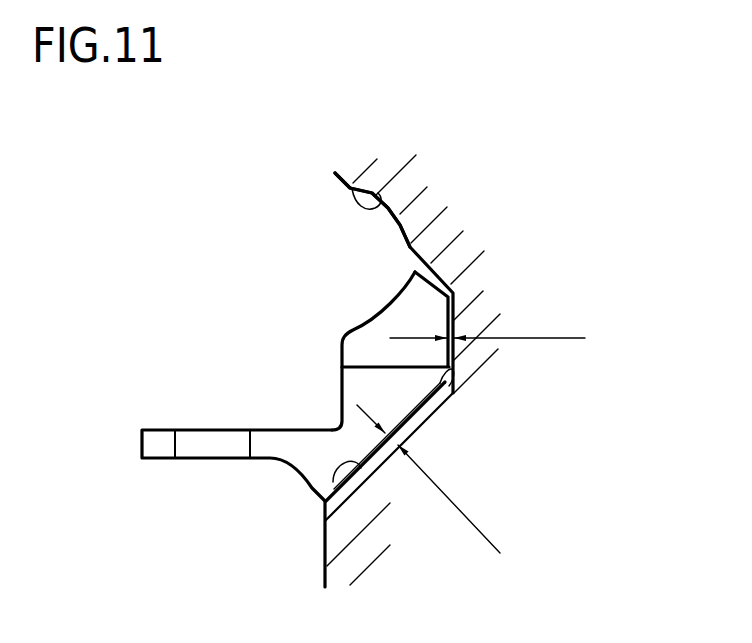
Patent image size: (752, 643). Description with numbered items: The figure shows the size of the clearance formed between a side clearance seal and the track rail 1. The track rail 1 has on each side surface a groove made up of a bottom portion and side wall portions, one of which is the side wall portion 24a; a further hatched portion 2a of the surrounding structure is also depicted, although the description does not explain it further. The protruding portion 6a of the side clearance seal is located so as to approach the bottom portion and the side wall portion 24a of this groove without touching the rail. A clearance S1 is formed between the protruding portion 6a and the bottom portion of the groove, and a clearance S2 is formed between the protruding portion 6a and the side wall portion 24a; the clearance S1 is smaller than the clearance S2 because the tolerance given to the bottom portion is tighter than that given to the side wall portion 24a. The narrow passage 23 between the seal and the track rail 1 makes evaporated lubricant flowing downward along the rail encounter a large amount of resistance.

The track rail 1 is at (465, 245).
The upper wall portion 2a is at (376, 177).
The protruding portion 6a is at (360, 388).
The passage 23 is at (446, 392).
The side wall portion 24a is at (336, 482).
The clearance S1 is at (487, 316).
The clearance S2 is at (443, 479).